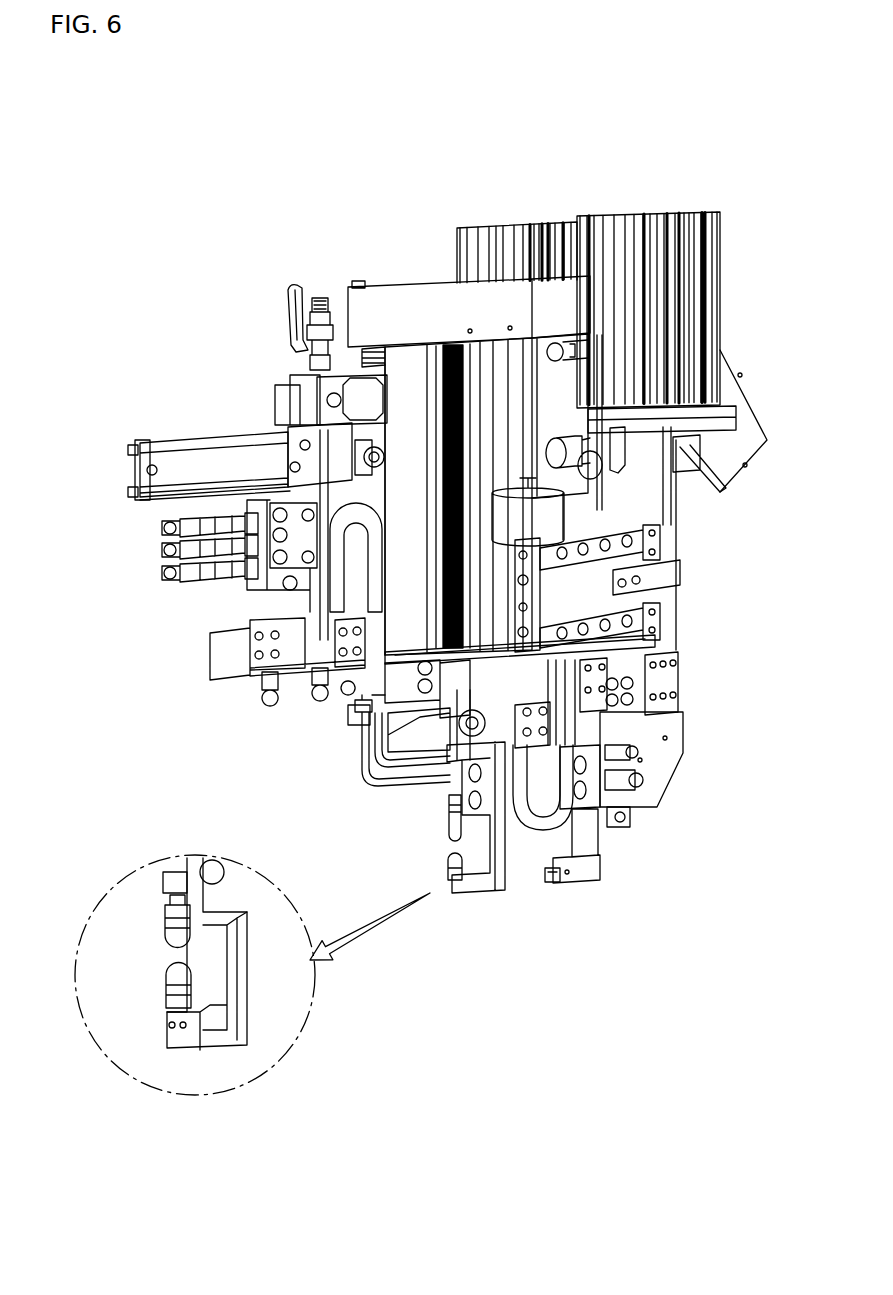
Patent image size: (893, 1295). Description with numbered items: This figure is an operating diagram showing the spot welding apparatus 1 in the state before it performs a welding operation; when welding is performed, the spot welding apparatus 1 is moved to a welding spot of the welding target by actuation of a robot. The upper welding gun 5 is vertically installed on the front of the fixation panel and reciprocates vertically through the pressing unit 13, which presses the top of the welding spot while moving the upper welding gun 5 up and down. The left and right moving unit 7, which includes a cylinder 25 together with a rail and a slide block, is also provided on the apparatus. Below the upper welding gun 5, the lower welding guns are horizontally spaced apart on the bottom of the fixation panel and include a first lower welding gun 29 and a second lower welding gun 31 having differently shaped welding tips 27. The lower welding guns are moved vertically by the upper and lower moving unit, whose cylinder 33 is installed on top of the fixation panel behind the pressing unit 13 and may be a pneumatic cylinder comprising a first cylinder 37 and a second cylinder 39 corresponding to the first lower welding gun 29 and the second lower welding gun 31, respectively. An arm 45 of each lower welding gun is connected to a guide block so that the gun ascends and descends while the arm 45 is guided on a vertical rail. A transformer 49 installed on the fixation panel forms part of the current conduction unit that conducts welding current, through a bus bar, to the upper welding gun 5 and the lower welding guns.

The spot welding apparatus 1 is at (210, 303).
The upper welding gun 5 is at (447, 812).
The left and right moving unit 7 is at (606, 528).
The pressing unit 13 is at (406, 288).
The cylinder 25 is at (195, 458).
The welding tips 27 is at (455, 858).
The first lower welding gun 29 is at (490, 896).
The second lower welding gun 31 is at (587, 868).
The cylinder 33 is at (648, 93).
The first cylinder 37 is at (528, 223).
The second cylinder 39 is at (624, 212).
The arm 45 is at (665, 764).
The transformer 49 is at (345, 385).